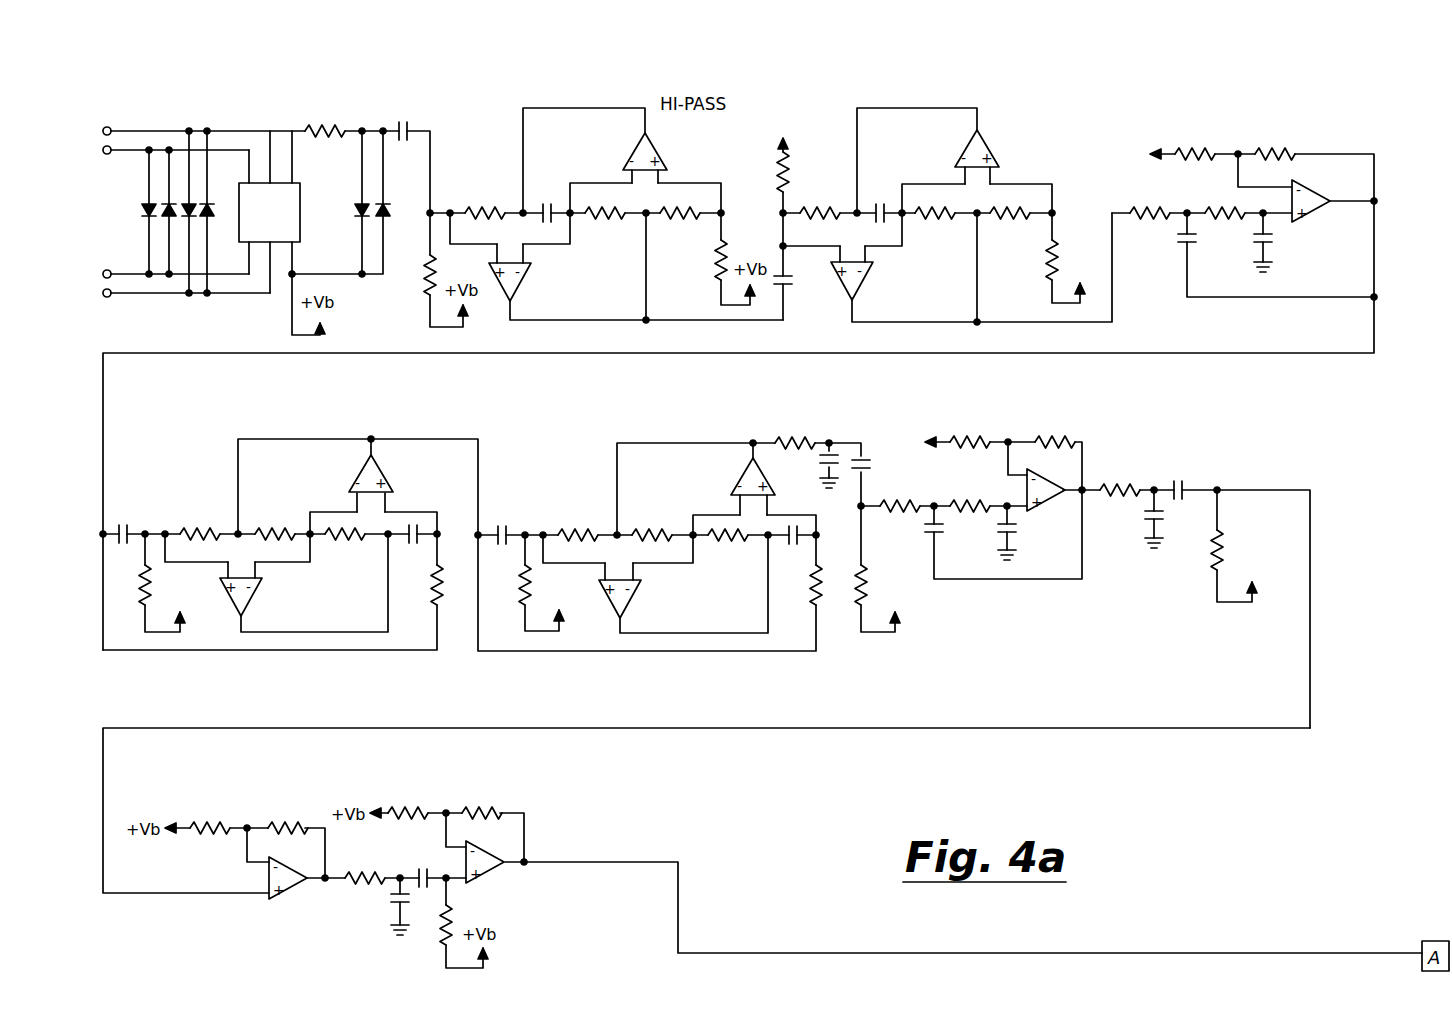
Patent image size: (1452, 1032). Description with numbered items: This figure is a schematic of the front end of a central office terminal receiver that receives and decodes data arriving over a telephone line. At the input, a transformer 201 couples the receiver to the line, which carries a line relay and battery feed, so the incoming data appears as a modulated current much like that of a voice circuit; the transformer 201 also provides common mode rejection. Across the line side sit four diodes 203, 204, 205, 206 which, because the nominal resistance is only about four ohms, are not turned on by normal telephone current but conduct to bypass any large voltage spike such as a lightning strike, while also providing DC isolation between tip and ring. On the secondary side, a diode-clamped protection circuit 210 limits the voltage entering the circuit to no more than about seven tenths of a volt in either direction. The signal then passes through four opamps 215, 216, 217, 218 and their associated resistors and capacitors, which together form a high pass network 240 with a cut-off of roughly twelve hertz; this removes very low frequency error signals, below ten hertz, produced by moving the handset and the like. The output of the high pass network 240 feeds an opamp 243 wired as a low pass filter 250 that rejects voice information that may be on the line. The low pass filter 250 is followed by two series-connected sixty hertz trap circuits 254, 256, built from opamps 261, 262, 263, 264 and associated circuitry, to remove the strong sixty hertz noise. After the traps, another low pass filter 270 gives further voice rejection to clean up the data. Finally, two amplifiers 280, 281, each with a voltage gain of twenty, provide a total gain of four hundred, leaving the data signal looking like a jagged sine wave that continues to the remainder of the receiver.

The transformer 201 is at (282, 140).
The diode 203 is at (147, 207).
The diode 204 is at (174, 203).
The diode 205 is at (186, 207).
The diode 206 is at (211, 207).
The protection circuit 210 is at (359, 116).
The opamp 215 is at (518, 285).
The opamp 216 is at (654, 152).
The opamp 217 is at (860, 283).
The opamp 218 is at (985, 150).
The high pass network 240 is at (810, 110).
The opamp 243 is at (1322, 196).
The low pass filter 250 is at (1299, 116).
The sixty hertz trap circuit 254 is at (300, 658).
The sixty hertz trap circuit 256 is at (637, 661).
The opamp 261 is at (254, 600).
The opamp 262 is at (380, 472).
The opamp 263 is at (631, 600).
The opamp 264 is at (748, 470).
The low pass filter 270 is at (1110, 434).
The amplifier 280 is at (296, 902).
The amplifier 281 is at (500, 882).